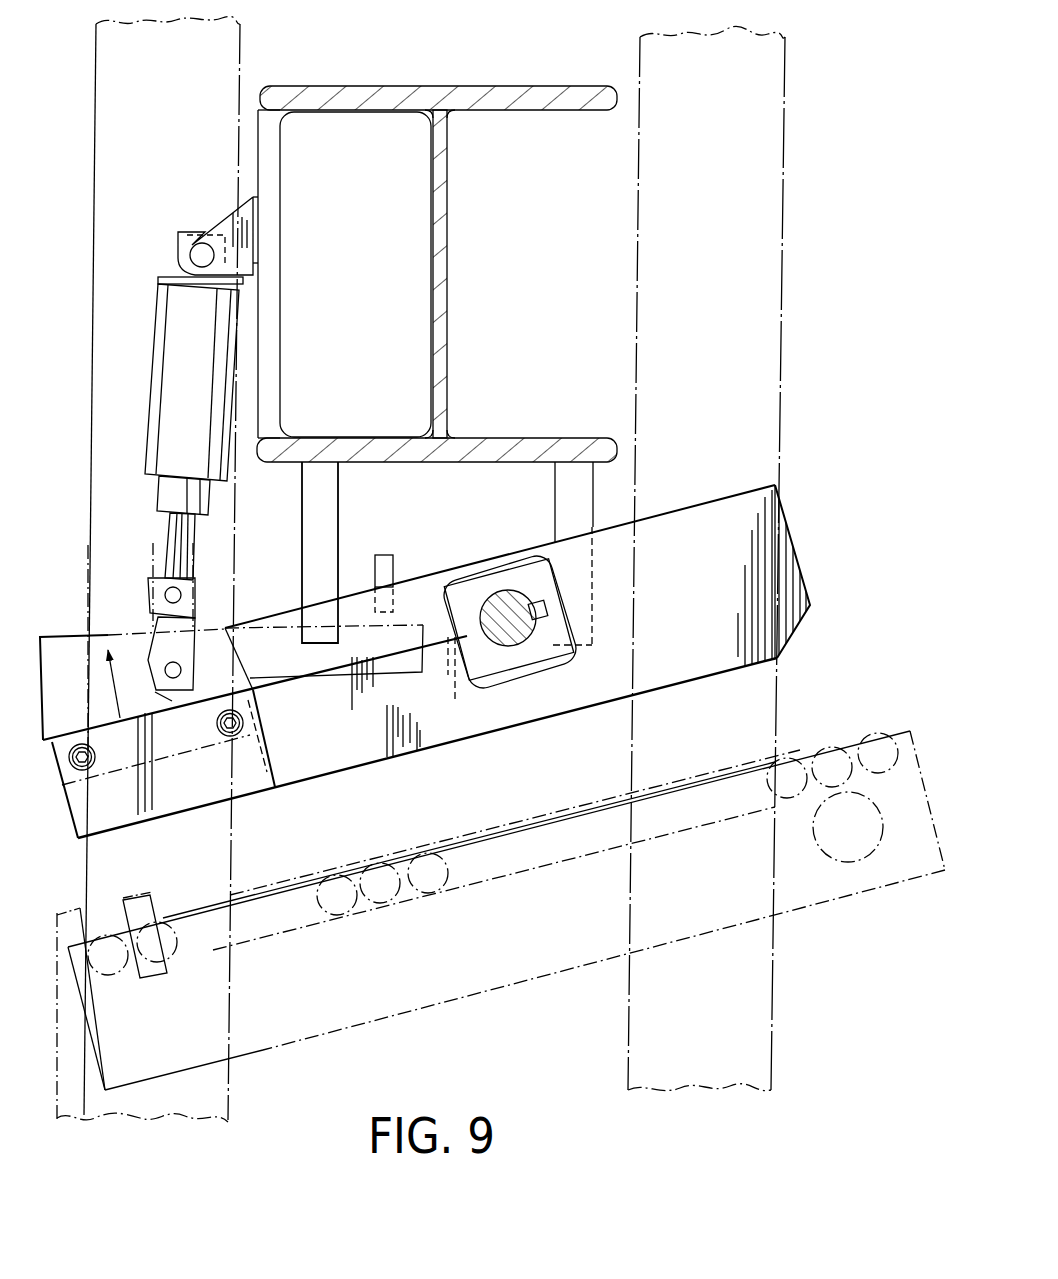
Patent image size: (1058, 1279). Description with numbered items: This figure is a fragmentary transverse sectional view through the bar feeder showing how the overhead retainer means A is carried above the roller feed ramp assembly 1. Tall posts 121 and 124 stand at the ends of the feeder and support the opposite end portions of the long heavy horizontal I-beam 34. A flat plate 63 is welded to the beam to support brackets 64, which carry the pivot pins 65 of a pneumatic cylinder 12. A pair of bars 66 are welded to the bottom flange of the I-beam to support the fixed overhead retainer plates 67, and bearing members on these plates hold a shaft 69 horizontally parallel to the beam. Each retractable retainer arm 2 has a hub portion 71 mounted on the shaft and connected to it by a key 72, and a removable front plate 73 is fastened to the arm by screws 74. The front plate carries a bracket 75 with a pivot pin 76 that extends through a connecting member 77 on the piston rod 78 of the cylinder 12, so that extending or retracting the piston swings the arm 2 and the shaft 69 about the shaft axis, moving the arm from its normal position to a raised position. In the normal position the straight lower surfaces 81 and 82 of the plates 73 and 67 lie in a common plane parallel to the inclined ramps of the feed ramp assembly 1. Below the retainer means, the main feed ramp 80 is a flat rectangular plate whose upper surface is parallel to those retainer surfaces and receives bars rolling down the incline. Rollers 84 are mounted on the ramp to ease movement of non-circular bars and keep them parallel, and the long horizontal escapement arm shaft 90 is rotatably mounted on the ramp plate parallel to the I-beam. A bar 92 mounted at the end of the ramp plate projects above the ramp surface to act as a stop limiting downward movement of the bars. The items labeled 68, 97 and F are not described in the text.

The tall post 121 is at (215, 47).
The tall post 124 is at (665, 52).
The bar 92 is at (68, 1083).
The I-beam 34 is at (445, 333).
The flat plate 63 is at (268, 318).
The bracket 64 is at (232, 218).
The pivot pin 65 is at (188, 247).
The pneumatic cylinder 12 is at (176, 345).
The piston rod 78 is at (175, 527).
The connecting member 77 is at (172, 616).
The pivot pin 76 is at (170, 667).
The bracket 75 is at (158, 694).
The removable front plate 73 is at (85, 817).
The retractable retainer arm 2 is at (317, 670).
The straight lower surface 81 is at (215, 805).
The screw 74 is at (217, 723).
The arm 68 is at (480, 698).
The straight lower surface 82 is at (470, 735).
The fixed overhead retainer plate 67 is at (667, 663).
The hub portion 71 is at (573, 652).
The shaft 69 is at (517, 633).
The key 72 is at (545, 607).
The bar 66 is at (320, 514).
The overhead retainer means A is at (408, 568).
The force arrow F is at (790, 340).
The main feed ramp 80 is at (505, 993).
The roller feed ramp assembly 1 is at (323, 875).
The roller 84 is at (380, 862).
The escapement arm shaft 90 is at (848, 835).
The bracket 97 is at (152, 892).